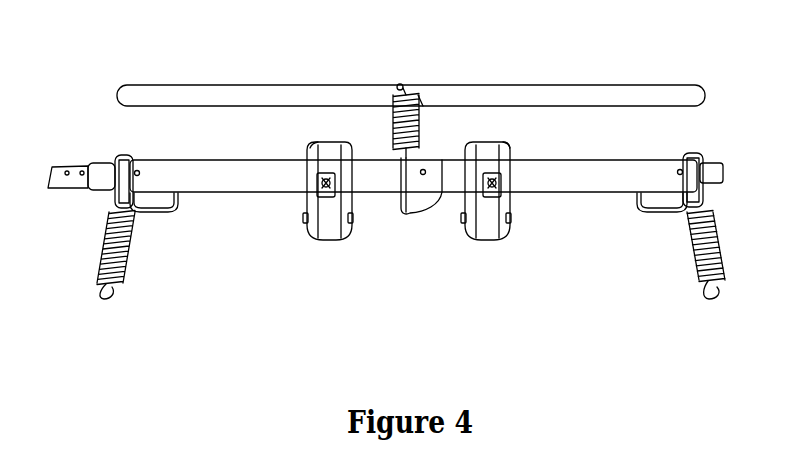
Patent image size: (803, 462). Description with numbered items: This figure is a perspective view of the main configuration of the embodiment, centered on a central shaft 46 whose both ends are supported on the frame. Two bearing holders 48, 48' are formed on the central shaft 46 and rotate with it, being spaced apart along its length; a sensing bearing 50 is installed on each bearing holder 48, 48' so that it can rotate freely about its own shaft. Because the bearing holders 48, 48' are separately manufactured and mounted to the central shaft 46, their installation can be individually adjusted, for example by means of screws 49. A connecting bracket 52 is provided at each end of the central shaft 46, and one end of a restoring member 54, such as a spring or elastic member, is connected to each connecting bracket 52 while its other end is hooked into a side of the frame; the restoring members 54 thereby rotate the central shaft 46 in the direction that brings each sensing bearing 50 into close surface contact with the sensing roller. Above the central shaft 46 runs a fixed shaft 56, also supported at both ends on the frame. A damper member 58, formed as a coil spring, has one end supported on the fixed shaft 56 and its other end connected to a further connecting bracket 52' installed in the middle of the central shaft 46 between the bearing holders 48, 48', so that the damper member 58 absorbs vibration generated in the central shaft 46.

The central shaft 46 is at (608, 183).
The bearing holder 48 is at (298, 201).
The bearing holder 48' is at (525, 199).
The screw 49 is at (335, 148).
The sensing bearing 50 is at (337, 240).
The connecting bracket 52 is at (407, 174).
The connecting bracket 52' is at (413, 256).
The restoring member 54 is at (103, 232).
The fixed shaft 56 is at (652, 90).
The damper member 58 is at (423, 88).